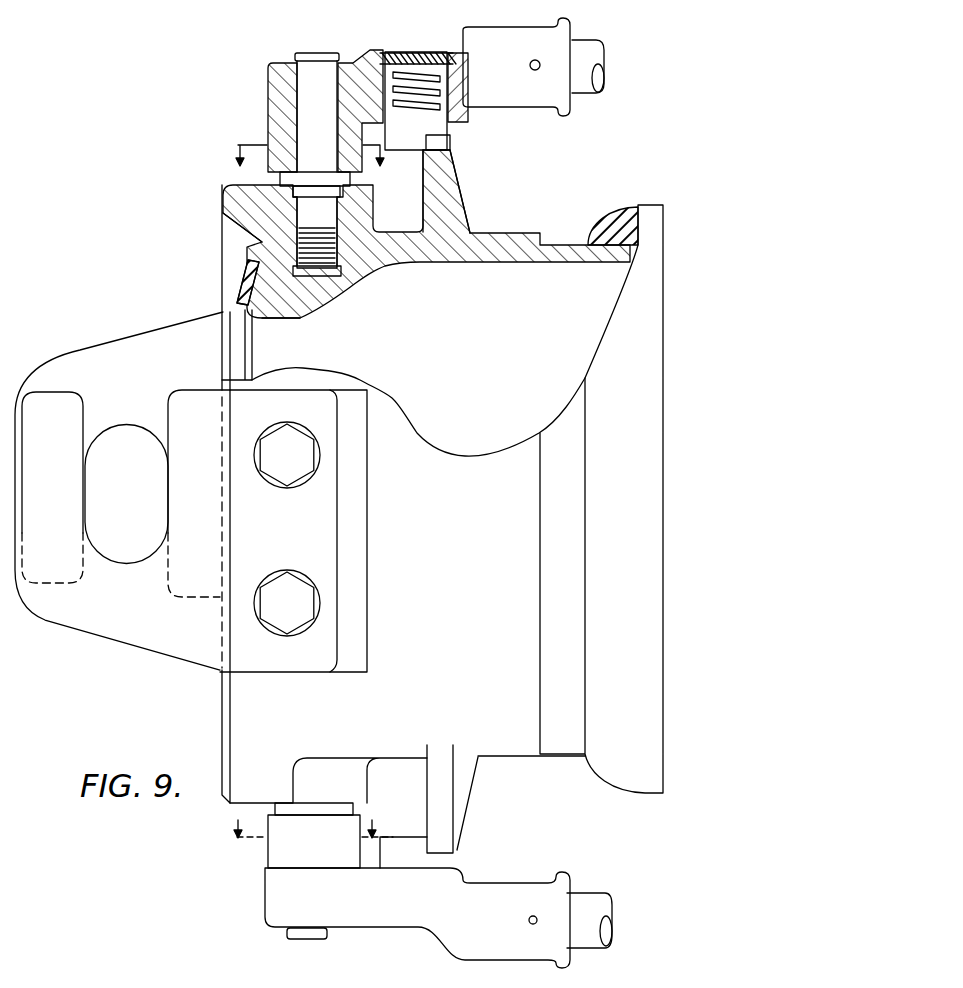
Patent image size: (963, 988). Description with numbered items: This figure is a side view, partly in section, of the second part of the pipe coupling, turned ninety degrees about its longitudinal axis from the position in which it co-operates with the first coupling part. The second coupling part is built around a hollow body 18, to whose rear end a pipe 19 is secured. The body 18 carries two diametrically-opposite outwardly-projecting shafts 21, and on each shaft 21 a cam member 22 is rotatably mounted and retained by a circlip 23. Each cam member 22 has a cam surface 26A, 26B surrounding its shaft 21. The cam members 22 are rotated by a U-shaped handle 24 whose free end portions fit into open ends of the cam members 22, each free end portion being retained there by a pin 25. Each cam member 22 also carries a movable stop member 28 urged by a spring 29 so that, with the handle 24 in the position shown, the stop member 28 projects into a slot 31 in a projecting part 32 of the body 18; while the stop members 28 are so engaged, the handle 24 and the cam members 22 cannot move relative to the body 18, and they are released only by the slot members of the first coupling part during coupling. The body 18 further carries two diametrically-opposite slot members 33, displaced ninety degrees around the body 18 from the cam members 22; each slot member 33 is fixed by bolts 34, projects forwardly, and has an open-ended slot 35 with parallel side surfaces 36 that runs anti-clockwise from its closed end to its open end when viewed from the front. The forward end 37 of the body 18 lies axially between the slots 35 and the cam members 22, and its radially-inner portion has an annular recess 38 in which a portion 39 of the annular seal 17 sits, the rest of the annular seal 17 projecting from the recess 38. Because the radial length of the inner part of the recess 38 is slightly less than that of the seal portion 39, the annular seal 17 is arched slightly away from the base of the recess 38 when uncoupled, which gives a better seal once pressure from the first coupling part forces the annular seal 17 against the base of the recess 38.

The annular seal 17 is at (235, 292).
The hollow body 18 is at (385, 265).
The pipe 19 is at (580, 250).
The shaft 21 is at (327, 939).
The cam member 22 is at (372, 62).
The circlip 23 is at (293, 64).
The U-shaped handle 24 is at (584, 94).
The pin 25 is at (535, 71).
The cam surface 26A is at (268, 174).
The cam surface 26B is at (267, 847).
The movable stop member 28 is at (410, 146).
The spring 29 is at (428, 70).
The slot 31 is at (452, 140).
The projecting part 32 is at (433, 203).
The slot member 33 is at (60, 403).
The bolts 34 is at (287, 582).
The open-ended slot 35 is at (150, 420).
The side surfaces 36 is at (168, 486).
The forward end 37 is at (247, 246).
The annular recess 38 is at (258, 317).
The portion of the seal 39 is at (306, 317).